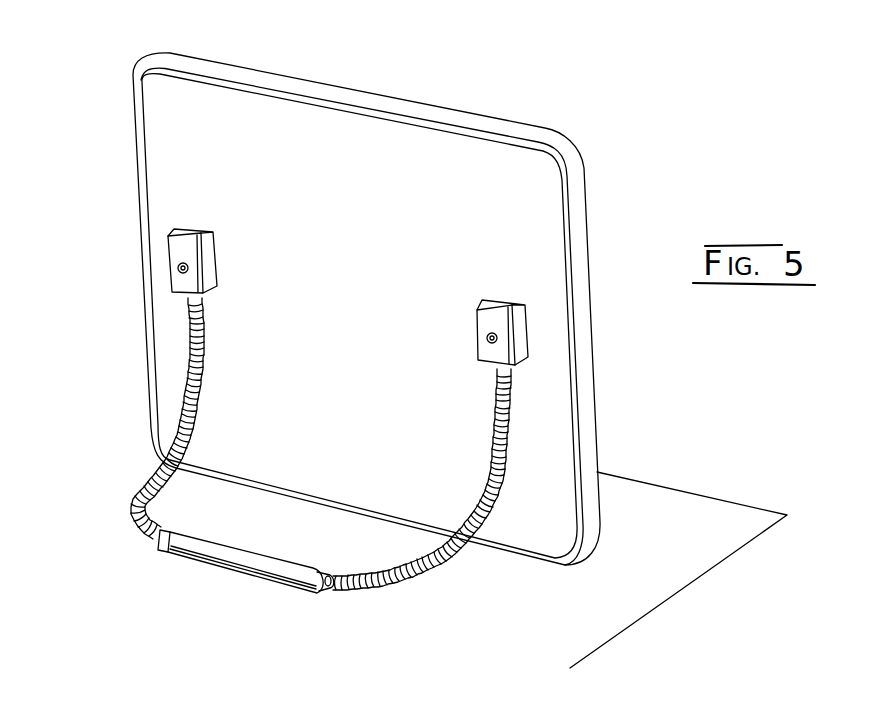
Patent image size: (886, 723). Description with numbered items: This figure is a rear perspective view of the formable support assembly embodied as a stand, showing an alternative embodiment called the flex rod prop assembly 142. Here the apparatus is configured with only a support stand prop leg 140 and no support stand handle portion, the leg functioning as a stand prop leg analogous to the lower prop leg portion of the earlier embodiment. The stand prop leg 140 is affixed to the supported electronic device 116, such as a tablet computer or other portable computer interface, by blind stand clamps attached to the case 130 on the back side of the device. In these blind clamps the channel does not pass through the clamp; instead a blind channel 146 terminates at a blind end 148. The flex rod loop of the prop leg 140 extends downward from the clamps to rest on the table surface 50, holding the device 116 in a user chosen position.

The table surface 50 is at (720, 520).
The electronic device 116 is at (597, 186).
The case 130 is at (533, 268).
The support stand prop leg 140 is at (121, 544).
The flex rod prop assembly 142 is at (637, 50).
The blind channel 146 is at (478, 371).
The blind end 148 is at (490, 300).